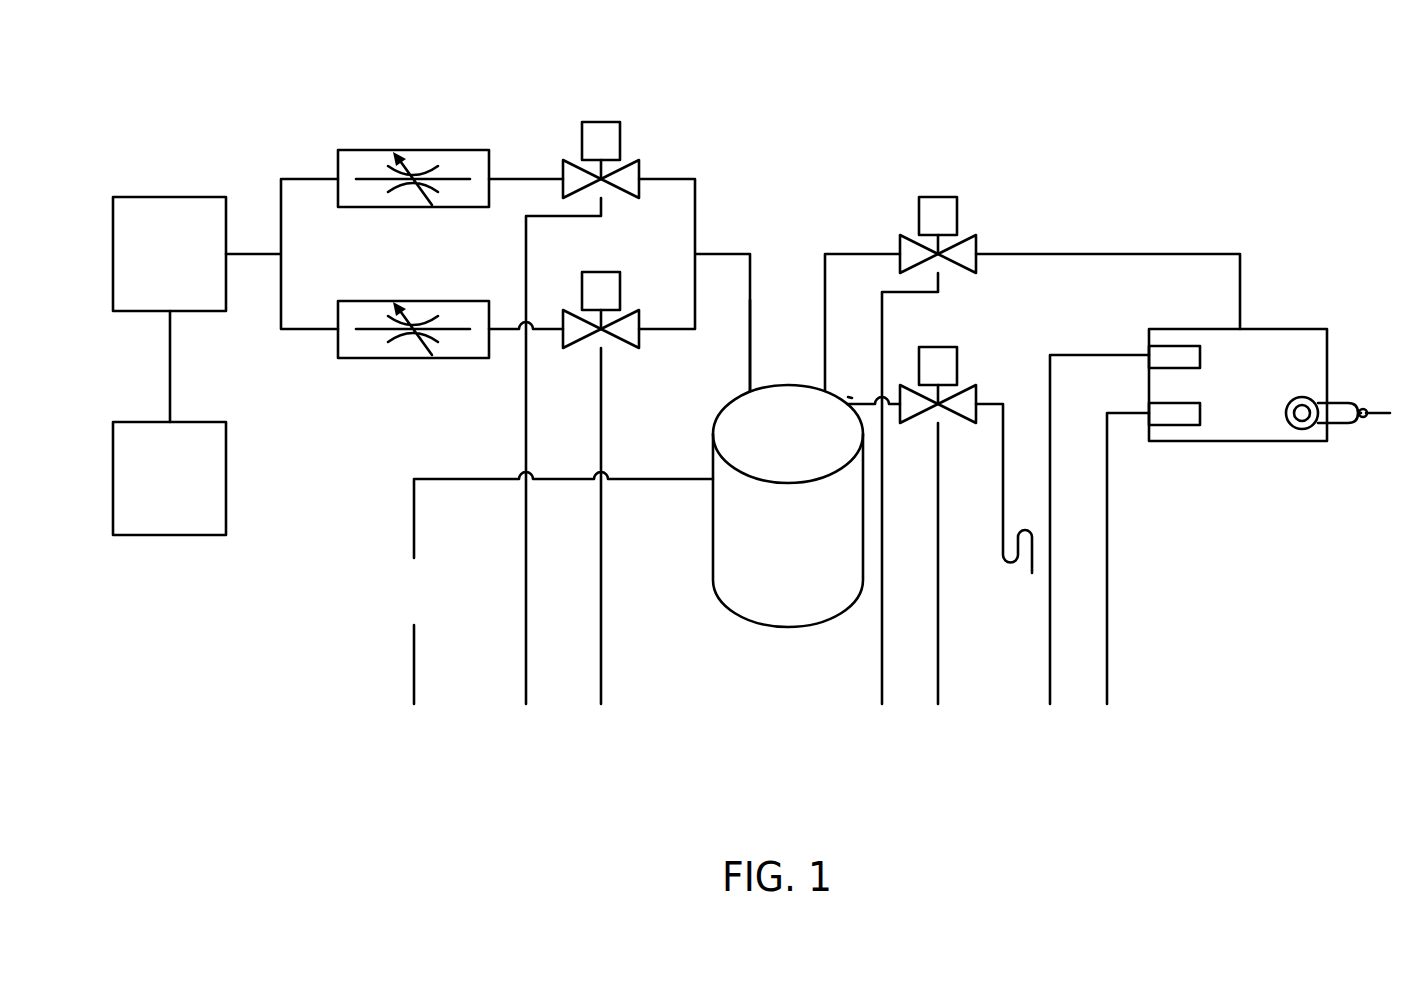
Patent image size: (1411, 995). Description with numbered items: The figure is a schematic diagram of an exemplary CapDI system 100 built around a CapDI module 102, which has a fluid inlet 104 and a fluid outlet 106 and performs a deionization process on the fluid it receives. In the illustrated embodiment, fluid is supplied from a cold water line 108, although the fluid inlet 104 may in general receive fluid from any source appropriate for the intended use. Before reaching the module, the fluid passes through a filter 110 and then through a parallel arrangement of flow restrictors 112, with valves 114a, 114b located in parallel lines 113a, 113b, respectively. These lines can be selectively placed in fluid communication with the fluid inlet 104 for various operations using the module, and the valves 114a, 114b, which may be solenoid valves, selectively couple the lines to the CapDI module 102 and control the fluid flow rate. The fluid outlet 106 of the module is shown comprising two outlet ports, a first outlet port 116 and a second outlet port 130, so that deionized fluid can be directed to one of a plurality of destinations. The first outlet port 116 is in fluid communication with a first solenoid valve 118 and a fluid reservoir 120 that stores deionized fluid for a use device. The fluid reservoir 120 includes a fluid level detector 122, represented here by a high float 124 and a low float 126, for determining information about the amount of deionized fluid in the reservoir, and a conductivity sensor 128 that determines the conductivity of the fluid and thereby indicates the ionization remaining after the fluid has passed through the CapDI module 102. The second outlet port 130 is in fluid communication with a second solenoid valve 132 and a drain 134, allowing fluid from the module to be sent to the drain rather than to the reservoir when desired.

The CapDI system 100 is at (254, 66).
The CapDI module 102 is at (780, 612).
The fluid inlet 104 is at (738, 377).
The fluid outlet 106 is at (853, 388).
The cold water line 108 is at (227, 458).
The filter 110 is at (169, 254).
The flow restrictors 112 is at (426, 254).
The parallel line 113a is at (518, 172).
The parallel line 113b is at (507, 322).
The valve 114a is at (620, 142).
The valve 114b is at (620, 292).
The first outlet port 116 is at (825, 393).
The first solenoid valve 118 is at (958, 216).
The fluid reservoir 120 is at (1235, 394).
The fluid level detector 122 is at (1130, 382).
The high float 124 is at (1165, 357).
The low float 126 is at (1165, 414).
The conductivity sensor 128 is at (1300, 428).
The second outlet port 130 is at (848, 406).
The second solenoid valve 132 is at (958, 366).
The drain 134 is at (998, 562).